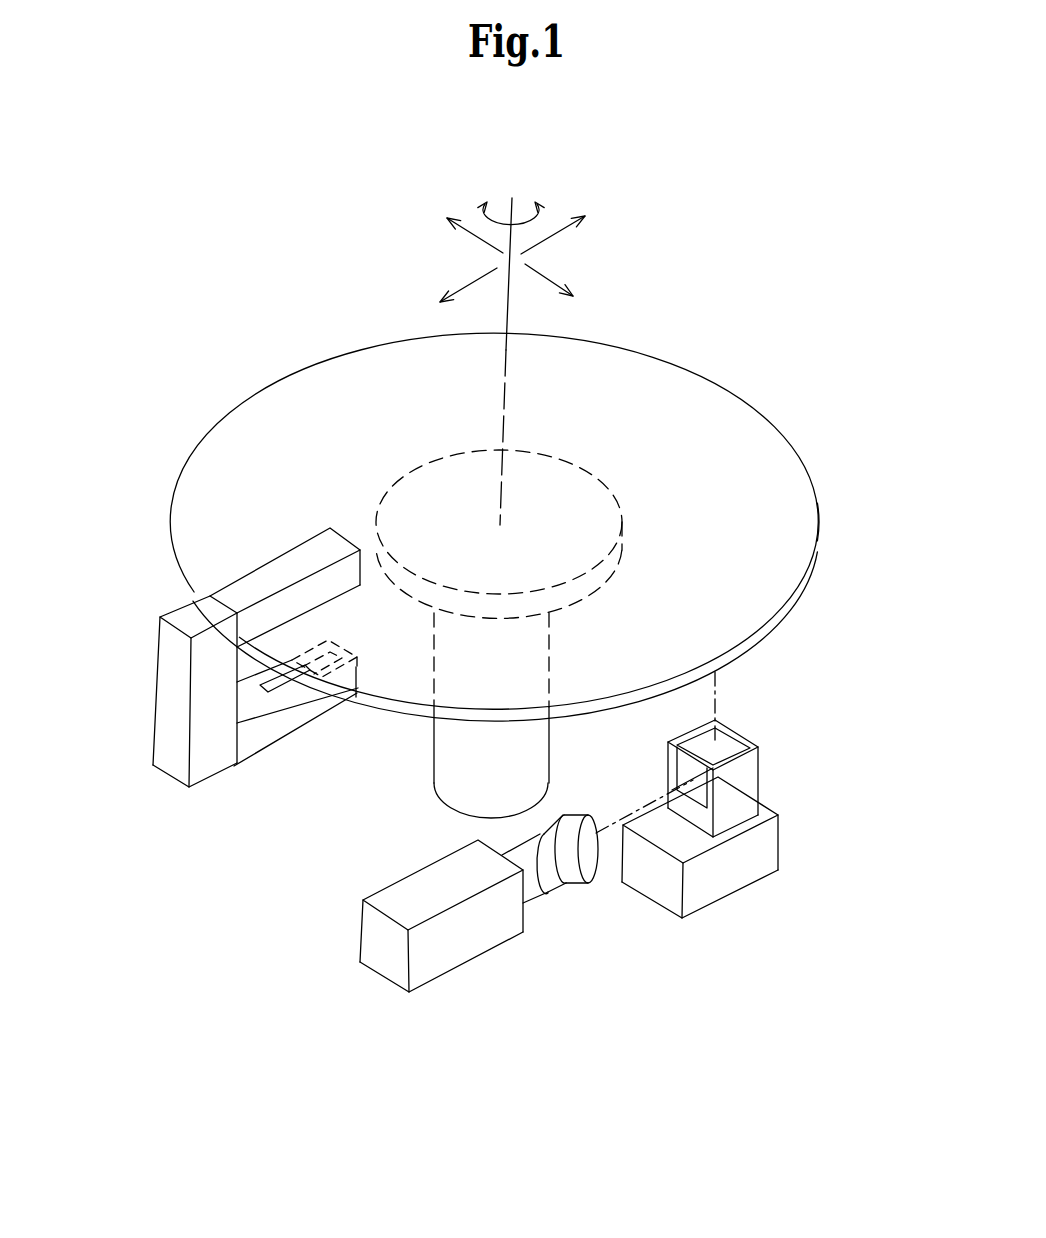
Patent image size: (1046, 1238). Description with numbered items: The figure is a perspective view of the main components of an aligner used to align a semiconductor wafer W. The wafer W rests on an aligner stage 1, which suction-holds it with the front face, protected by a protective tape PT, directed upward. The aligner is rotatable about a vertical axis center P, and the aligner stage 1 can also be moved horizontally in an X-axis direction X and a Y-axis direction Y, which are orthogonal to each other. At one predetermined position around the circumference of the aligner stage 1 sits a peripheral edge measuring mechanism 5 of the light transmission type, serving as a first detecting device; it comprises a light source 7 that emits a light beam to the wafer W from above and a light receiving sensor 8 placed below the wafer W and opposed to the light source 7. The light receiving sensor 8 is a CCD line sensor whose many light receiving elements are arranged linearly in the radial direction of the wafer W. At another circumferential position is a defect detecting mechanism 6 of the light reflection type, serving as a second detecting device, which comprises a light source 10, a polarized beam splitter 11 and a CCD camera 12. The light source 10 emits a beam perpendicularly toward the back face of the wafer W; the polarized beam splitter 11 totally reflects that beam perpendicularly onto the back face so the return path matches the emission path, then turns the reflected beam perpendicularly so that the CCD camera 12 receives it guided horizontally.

The aligner stage 1 is at (552, 458).
The peripheral edge measuring mechanism 5 is at (220, 648).
The defect detecting mechanism 6 is at (601, 881).
The light source 7 is at (273, 568).
The light receiving sensor 8 is at (290, 714).
The light source 10 is at (773, 852).
The polarized beam splitter 11 is at (755, 768).
The CCD camera 12 is at (478, 948).
The semiconductor wafer W is at (759, 418).
The protective tape PT is at (806, 514).
The vertical axis center P is at (513, 200).
The X-axis direction X is at (456, 237).
The Y-axis direction Y is at (570, 236).